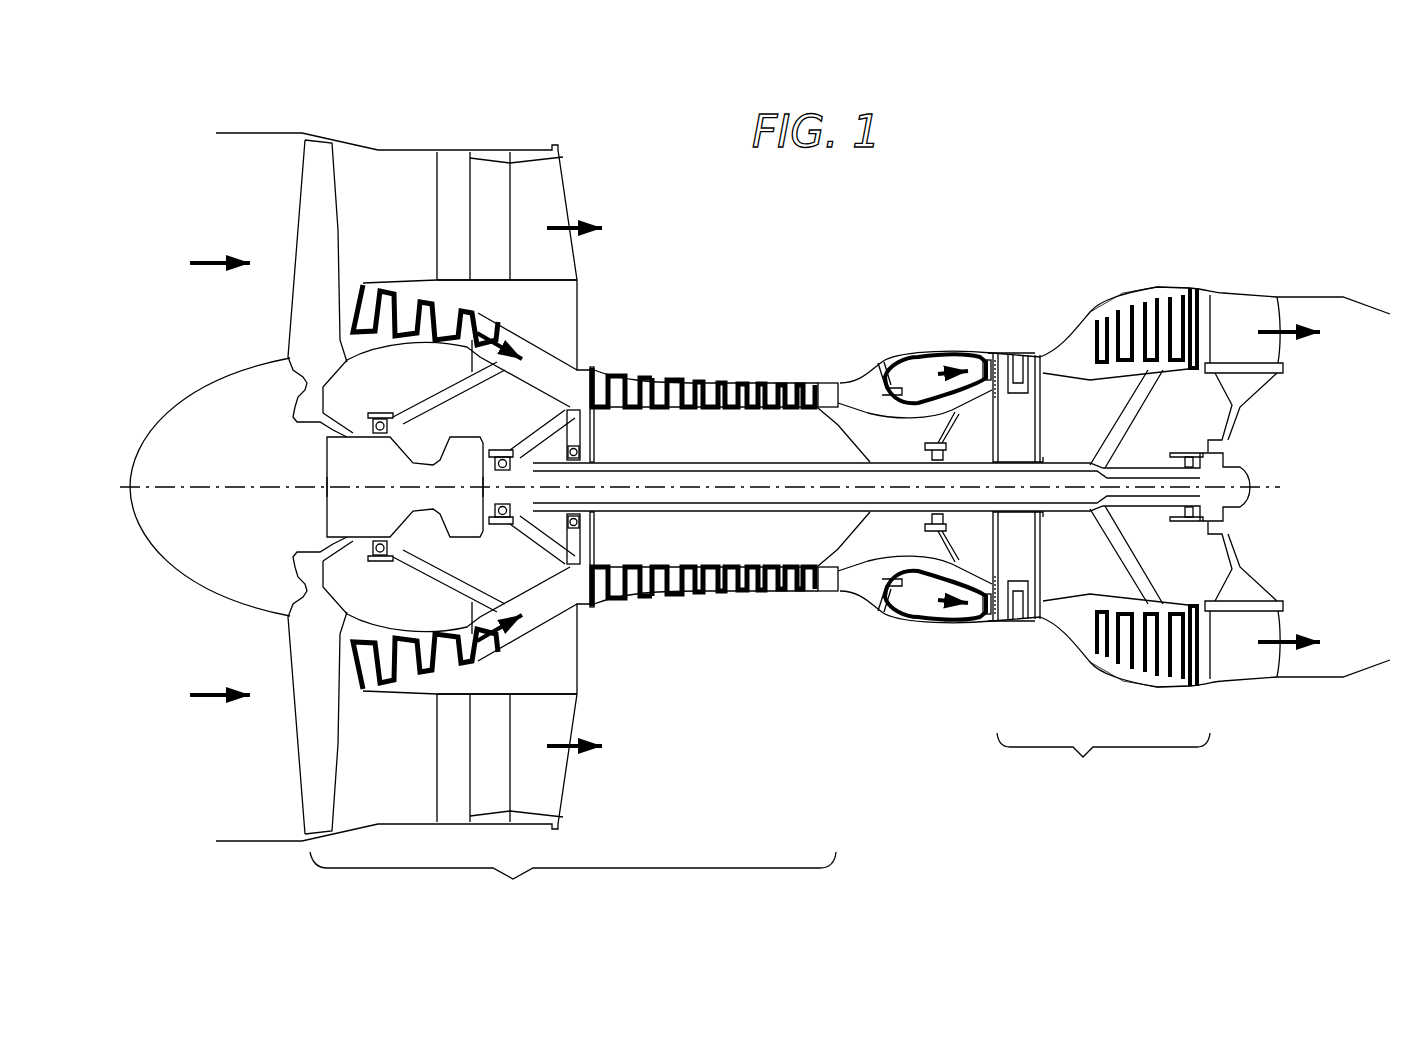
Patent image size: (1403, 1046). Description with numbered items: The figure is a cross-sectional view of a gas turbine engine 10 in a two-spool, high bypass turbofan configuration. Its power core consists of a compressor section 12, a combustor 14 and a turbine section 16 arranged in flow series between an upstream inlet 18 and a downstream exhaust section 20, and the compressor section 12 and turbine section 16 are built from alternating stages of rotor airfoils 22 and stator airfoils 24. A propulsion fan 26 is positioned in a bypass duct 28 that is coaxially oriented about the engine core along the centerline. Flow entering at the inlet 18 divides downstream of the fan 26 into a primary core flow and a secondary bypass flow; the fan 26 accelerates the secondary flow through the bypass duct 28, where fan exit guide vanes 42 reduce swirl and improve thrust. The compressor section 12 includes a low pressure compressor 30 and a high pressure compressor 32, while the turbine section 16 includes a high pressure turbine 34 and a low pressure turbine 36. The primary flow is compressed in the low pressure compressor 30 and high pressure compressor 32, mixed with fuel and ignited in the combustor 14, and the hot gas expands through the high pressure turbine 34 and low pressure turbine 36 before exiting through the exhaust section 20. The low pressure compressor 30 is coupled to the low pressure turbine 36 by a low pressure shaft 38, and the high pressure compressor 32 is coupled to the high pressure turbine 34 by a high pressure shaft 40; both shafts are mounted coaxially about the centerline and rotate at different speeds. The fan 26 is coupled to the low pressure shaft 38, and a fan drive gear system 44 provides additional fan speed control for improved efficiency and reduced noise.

The gas turbine engine 10 is at (180, 107).
The compressor section 12 is at (573, 878).
The combustor 14 is at (938, 354).
The turbine section 16 is at (1103, 759).
The inlet 18 is at (203, 362).
The exhaust section 20 is at (1328, 429).
The rotor airfoils 22 is at (633, 377).
The stator airfoils 24 is at (678, 385).
The propulsion fan 26 is at (317, 222).
The bypass duct 28 is at (408, 222).
The low pressure compressor 30 is at (522, 652).
The high pressure compressor 32 is at (725, 603).
The high pressure turbine 34 is at (1022, 632).
The low pressure turbine 36 is at (1098, 674).
The low pressure shaft 38 is at (752, 505).
The high pressure shaft 40 is at (846, 520).
The fan exit guide vanes 42 is at (447, 170).
The fan drive gear system 44 is at (477, 428).